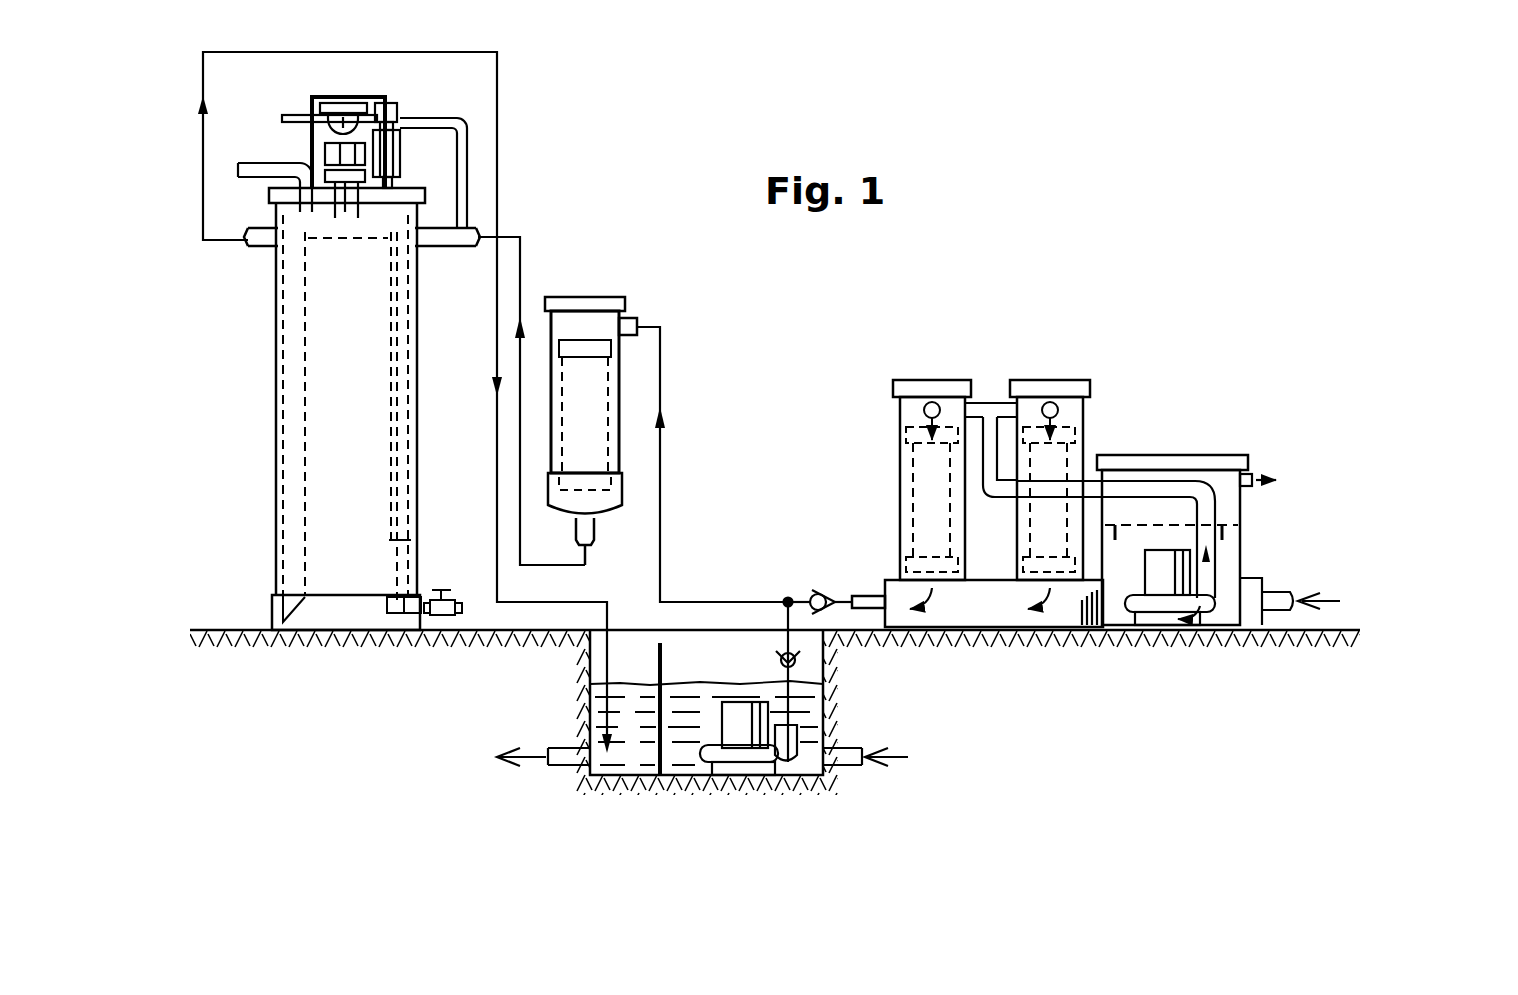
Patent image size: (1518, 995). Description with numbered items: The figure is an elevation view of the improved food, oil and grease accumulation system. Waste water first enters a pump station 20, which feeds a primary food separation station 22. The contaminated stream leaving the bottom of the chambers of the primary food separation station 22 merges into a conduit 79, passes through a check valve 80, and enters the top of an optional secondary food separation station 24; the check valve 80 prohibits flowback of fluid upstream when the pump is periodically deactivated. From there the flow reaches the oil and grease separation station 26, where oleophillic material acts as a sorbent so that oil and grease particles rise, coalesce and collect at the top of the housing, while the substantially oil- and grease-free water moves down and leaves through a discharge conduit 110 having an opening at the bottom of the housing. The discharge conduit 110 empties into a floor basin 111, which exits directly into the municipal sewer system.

The pump station 20 is at (1160, 445).
The primary food separation station 22 is at (997, 383).
The secondary food separation station 24 is at (588, 292).
The oil and grease separation station 26 is at (266, 306).
The conduit 79 is at (840, 600).
The check valve 80 is at (810, 590).
The discharge conduit 110 is at (366, 53).
The floor basin 111 is at (641, 758).